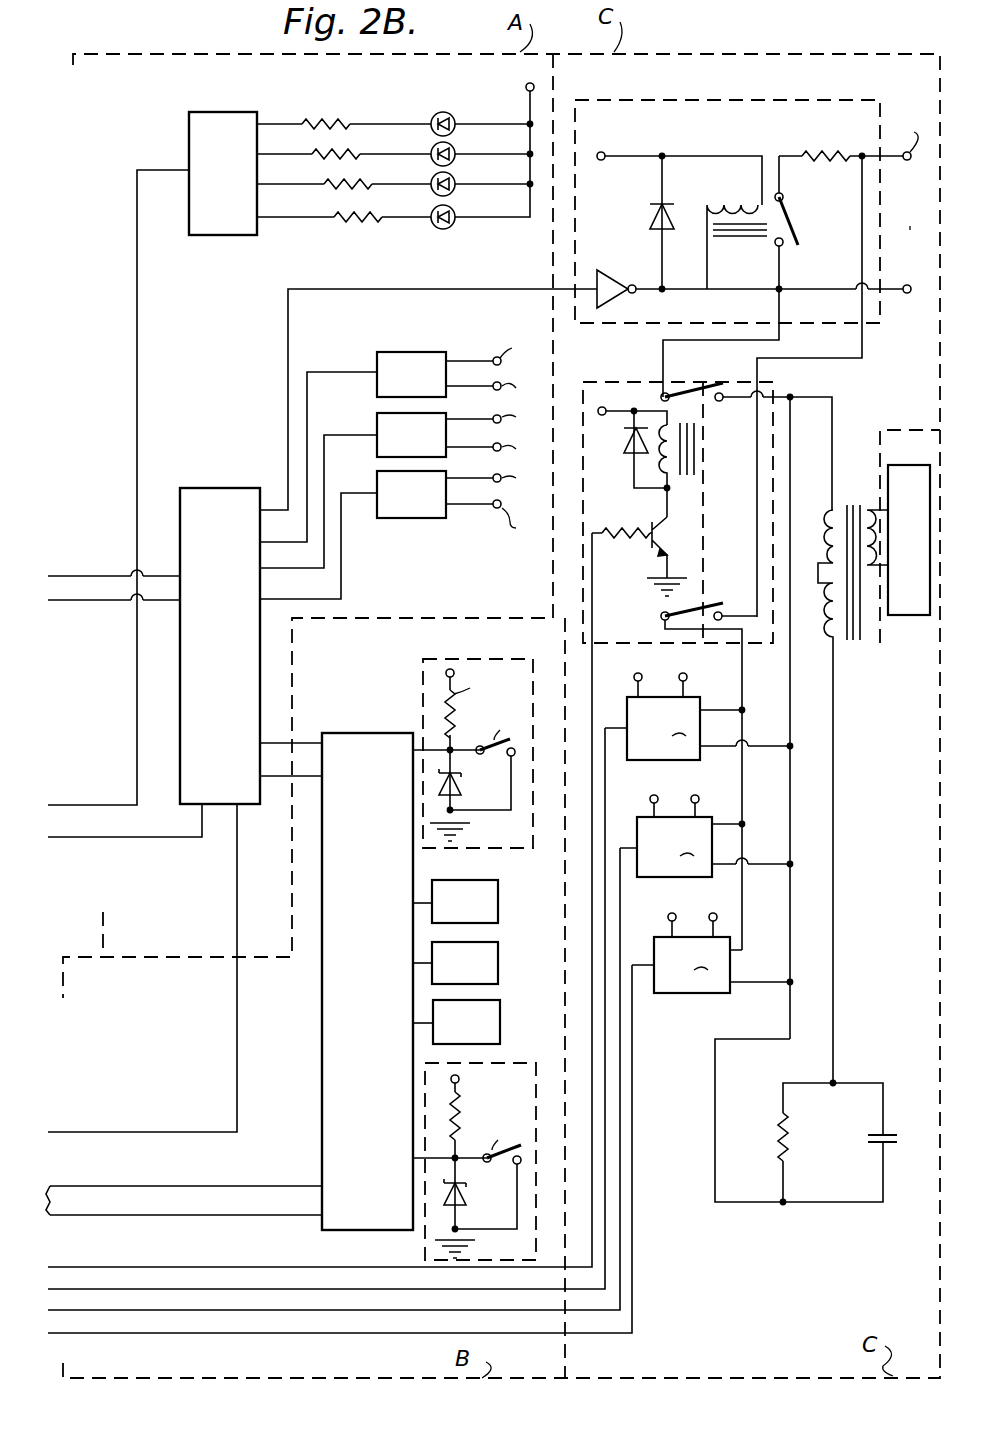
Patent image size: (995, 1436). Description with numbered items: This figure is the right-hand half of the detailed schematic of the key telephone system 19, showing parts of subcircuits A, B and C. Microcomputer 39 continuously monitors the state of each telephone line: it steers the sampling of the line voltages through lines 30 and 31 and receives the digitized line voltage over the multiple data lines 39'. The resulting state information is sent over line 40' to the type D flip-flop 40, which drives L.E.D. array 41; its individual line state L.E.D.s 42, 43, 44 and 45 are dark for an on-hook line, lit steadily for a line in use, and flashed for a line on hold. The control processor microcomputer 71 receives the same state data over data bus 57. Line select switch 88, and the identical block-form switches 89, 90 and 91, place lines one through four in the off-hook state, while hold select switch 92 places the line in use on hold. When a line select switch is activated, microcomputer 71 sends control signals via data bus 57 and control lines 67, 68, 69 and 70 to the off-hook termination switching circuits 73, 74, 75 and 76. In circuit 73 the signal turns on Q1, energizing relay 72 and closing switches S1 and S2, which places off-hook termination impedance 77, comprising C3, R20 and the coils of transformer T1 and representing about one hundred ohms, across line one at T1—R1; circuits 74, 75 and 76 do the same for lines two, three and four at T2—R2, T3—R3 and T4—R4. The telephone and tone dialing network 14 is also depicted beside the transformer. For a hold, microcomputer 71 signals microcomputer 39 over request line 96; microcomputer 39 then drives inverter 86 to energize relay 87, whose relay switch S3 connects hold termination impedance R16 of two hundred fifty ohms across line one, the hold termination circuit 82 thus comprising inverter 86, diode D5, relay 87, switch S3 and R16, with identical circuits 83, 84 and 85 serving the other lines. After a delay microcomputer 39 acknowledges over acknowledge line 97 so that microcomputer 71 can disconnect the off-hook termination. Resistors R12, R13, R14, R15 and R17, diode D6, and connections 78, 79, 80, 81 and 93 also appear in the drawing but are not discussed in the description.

The telephone and tone dialing network 14 is at (908, 462).
The key telephone system 19 is at (204, 52).
The line 30 is at (94, 576).
The line 31 is at (90, 604).
The microcomputer 39 is at (249, 613).
The data lines 39' is at (125, 848).
The type D flip-flop 40 is at (181, 156).
The line 40' is at (118, 487).
The L.E.D. array 41 is at (448, 118).
The individual line state L.E.D. 42 is at (456, 130).
The individual line state L.E.D. 43 is at (456, 160).
The individual line state L.E.D. 44 is at (456, 190).
The individual line state L.E.D. 45 is at (456, 223).
The data bus 57 is at (176, 1186).
The control line 67 is at (96, 1262).
The control line 68 is at (134, 1288).
The control line 69 is at (86, 1312).
The control line 70 is at (143, 1336).
The control processor microcomputer 71 is at (318, 1105).
The relay 72 is at (710, 655).
The off-hook termination switching circuit 73 is at (768, 652).
The off-hook termination switching circuit 74 is at (699, 706).
The off-hook termination switching circuit 75 is at (704, 820).
The off-hook termination switching circuit 76 is at (712, 972).
The off-hook termination impedance 77 is at (811, 1158).
The control line 78 is at (286, 296).
The control line 79 is at (354, 372).
The control line 80 is at (356, 436).
The control line 81 is at (341, 554).
The hold termination circuit 82 is at (757, 340).
The hold termination circuit 83 is at (418, 350).
The hold termination circuit 84 is at (378, 444).
The hold termination circuit 85 is at (426, 522).
The inverter 86 is at (636, 256).
The relay 87 is at (732, 196).
The line select switch 88 is at (420, 698).
The line select switch 89 is at (540, 898).
The line select switch 90 is at (532, 976).
The line select switch 91 is at (546, 1000).
The hold select switch 92 is at (518, 1064).
The connection line 93 is at (112, 1132).
The request line 96 is at (304, 742).
The acknowledge line 97 is at (306, 776).
The line one connection R1 is at (904, 302).
The resistor R12 is at (304, 122).
The resistor R13 is at (362, 152).
The resistor R14 is at (332, 192).
The resistor R15 is at (370, 220).
The hold termination impedance R16 is at (820, 156).
The resistor R17 is at (624, 528).
The resistor R20 is at (778, 1132).
The capacitor C3 is at (894, 1146).
The diode D5 is at (650, 216).
The diode D6 is at (624, 442).
The transistor Q1 is at (670, 556).
The switch S1 is at (714, 384).
The switch S2 is at (712, 604).
The relay switch S3 is at (798, 212).
The transformer / line one connection T1 is at (848, 496).
The line two connection T2 is at (636, 674).
The line three connection T3 is at (650, 796).
The line four connection T4 is at (670, 916).
The line two connection R2 is at (686, 660).
The line three connection R3 is at (685, 787).
The line four connection R4 is at (712, 916).